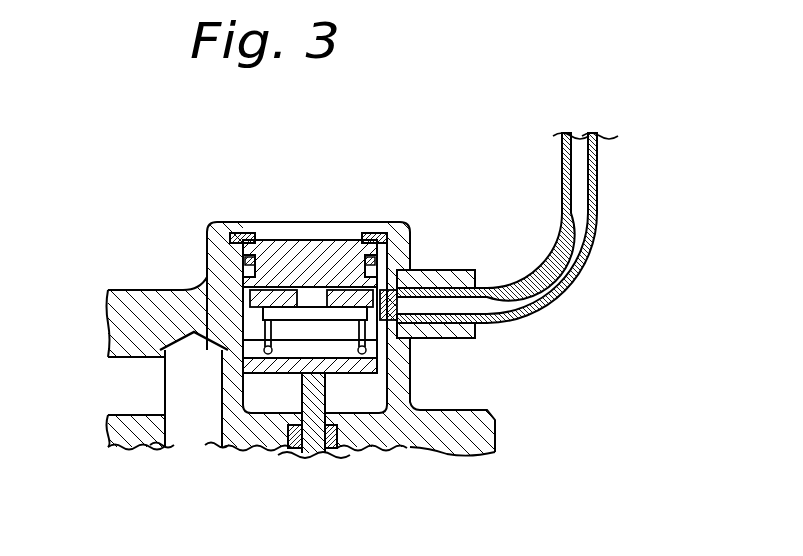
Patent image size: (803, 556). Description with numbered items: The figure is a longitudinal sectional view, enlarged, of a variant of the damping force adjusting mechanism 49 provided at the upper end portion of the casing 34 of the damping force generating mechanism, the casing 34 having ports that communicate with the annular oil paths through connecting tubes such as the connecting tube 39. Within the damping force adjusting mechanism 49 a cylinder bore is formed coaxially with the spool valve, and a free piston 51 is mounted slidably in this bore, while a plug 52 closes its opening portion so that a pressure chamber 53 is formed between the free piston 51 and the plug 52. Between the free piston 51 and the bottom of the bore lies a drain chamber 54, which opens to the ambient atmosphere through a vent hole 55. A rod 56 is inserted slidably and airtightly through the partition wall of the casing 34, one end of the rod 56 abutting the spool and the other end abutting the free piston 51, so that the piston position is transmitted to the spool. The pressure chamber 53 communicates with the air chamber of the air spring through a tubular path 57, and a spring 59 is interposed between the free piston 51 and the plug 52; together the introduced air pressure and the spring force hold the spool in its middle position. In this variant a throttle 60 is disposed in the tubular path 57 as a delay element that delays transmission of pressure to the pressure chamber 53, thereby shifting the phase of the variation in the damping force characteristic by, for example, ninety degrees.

The casing 34 is at (172, 298).
The connecting tube 39 is at (130, 393).
The damping force adjusting mechanism 49 is at (333, 222).
The free piston 51 is at (282, 370).
The plug 52 is at (345, 272).
The pressure chamber 53 is at (293, 333).
The drain chamber 54 is at (289, 428).
The vent hole 55 is at (413, 403).
The rod 56 is at (320, 456).
The tubular path 57 is at (583, 283).
The spring 59 is at (205, 280).
The throttle 60 is at (397, 287).